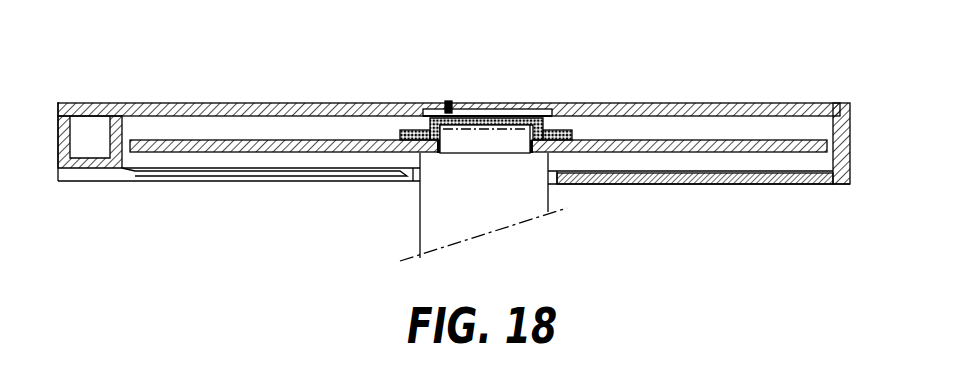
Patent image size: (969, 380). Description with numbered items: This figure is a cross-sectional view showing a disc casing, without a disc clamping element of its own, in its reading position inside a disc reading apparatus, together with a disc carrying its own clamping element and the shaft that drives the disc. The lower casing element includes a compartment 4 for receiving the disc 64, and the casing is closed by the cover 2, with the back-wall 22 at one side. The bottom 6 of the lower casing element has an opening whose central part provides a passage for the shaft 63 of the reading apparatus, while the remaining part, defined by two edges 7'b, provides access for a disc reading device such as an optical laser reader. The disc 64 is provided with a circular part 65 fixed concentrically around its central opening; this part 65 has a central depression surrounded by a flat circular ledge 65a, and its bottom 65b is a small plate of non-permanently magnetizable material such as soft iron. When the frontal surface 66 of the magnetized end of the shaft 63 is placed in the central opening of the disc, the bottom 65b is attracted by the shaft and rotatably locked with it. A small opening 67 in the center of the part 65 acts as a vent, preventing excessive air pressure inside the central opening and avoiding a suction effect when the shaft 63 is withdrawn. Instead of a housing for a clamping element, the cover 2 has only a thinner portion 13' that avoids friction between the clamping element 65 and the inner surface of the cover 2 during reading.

The cover 2 is at (668, 112).
The compartment 4 is at (226, 122).
The bottom 6 is at (728, 186).
The edges 7'b is at (264, 207).
The thinner portion 13' is at (487, 70).
The back-wall 22 is at (849, 130).
The shaft 63 is at (430, 228).
The disc 64 is at (658, 154).
The part 65 is at (447, 102).
The flat circular ledge 65a is at (582, 108).
The bottom 65b is at (531, 108).
The frontal surface 66 is at (470, 153).
The small opening 67 is at (486, 106).